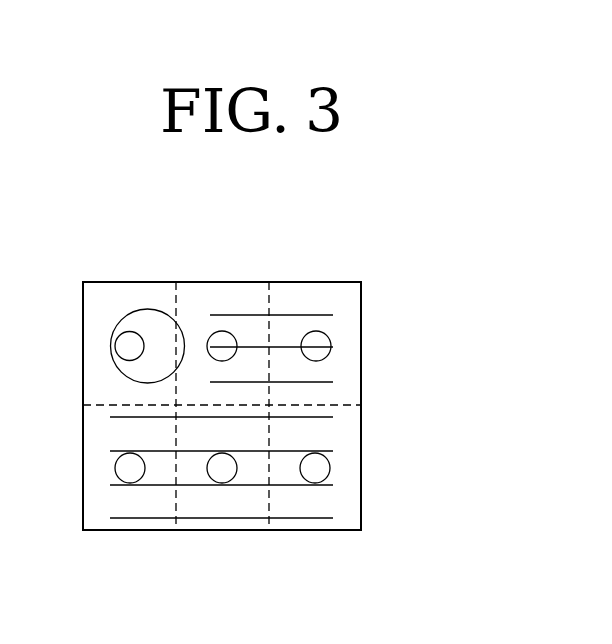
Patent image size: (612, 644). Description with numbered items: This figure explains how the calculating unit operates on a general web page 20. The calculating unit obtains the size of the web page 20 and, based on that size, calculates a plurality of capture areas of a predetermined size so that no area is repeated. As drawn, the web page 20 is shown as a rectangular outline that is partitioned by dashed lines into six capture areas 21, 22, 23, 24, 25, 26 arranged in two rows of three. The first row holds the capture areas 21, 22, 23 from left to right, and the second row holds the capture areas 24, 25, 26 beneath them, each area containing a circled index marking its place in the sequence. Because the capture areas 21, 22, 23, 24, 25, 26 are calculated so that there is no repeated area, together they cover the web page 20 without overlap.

The web page 20 is at (362, 282).
The capture area 21 is at (133, 282).
The capture area 22 is at (219, 282).
The capture area 23 is at (309, 282).
The capture area 24 is at (132, 531).
The capture area 25 is at (222, 531).
The capture area 26 is at (308, 531).